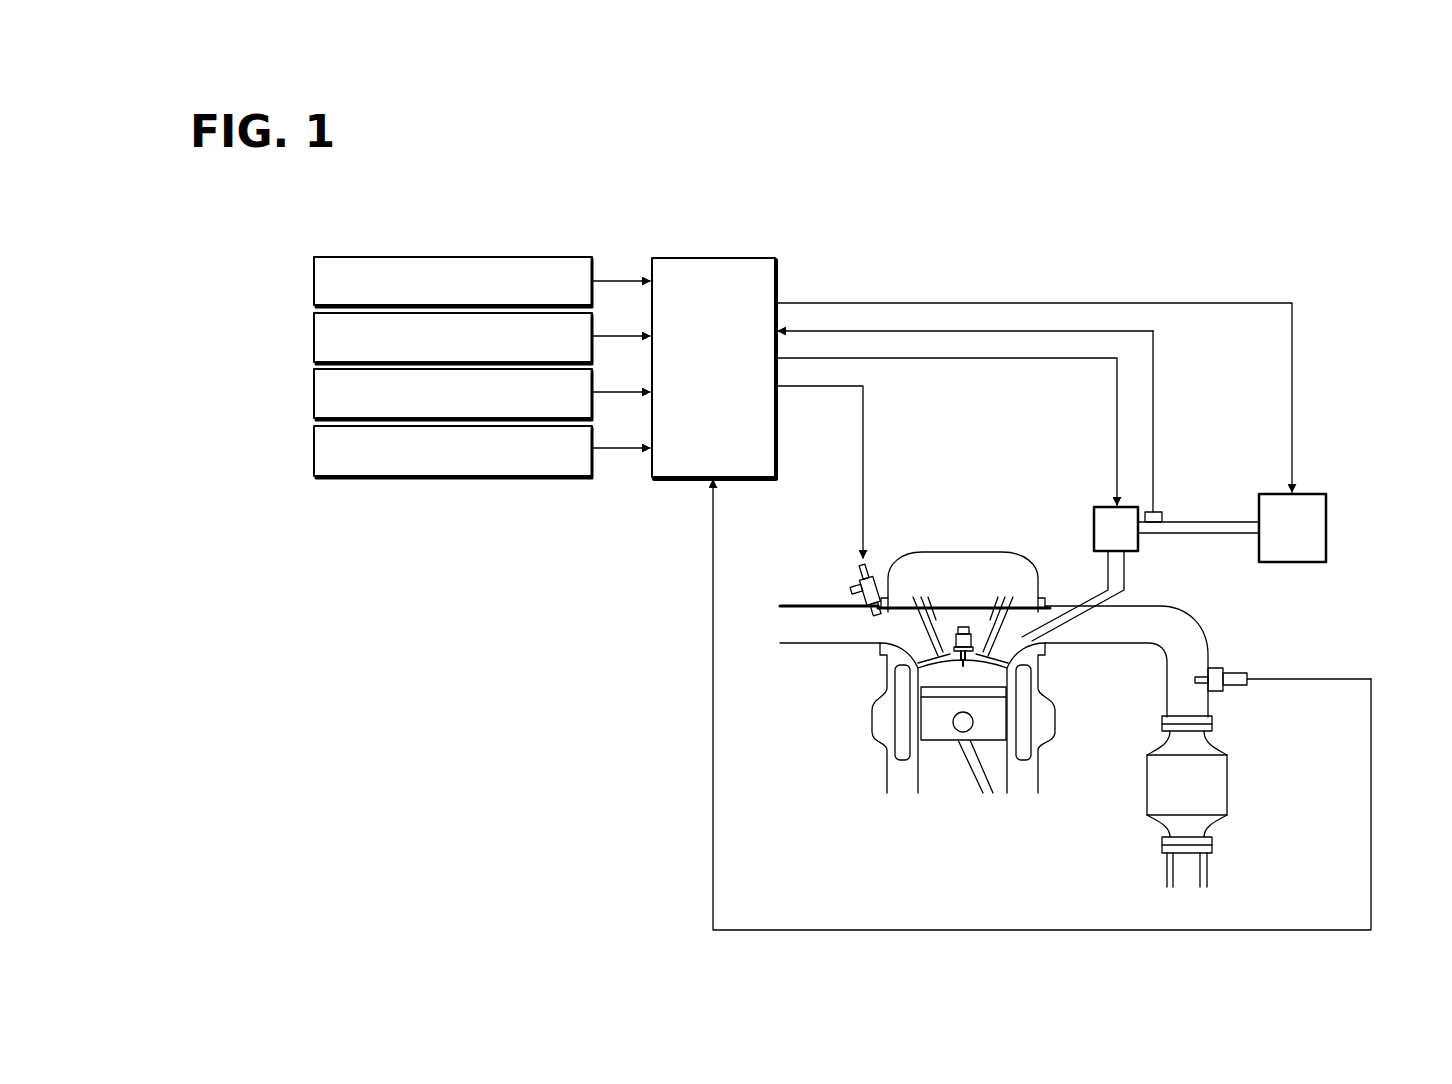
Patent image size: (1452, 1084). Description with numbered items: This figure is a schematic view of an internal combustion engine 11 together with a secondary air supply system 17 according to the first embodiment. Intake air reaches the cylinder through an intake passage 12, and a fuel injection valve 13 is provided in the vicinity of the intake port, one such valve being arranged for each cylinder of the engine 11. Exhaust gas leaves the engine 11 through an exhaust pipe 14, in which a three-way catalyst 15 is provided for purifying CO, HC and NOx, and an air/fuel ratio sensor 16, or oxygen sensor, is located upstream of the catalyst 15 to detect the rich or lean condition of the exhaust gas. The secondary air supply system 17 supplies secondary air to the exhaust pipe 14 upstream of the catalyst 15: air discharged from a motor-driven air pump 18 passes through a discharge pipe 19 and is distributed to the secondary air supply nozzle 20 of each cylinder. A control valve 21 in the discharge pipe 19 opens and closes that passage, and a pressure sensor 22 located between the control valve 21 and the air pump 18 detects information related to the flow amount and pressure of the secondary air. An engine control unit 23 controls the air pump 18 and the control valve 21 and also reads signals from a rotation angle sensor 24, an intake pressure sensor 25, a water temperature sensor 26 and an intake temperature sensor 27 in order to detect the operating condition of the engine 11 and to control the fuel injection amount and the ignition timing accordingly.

The internal combustion engine 11 is at (860, 731).
The intake pipe 12 is at (813, 645).
The fuel injection valve 13 is at (873, 584).
The exhaust pipe 14 is at (1153, 652).
The three-way catalyst 15 is at (1228, 785).
The air/fuel ratio sensor 16 is at (1237, 671).
The secondary air supply system 17 is at (1350, 463).
The air pump 18 is at (1326, 526).
The discharge pipe 19 is at (1204, 536).
The secondary air supply nozzle 20 is at (1063, 622).
The control valve 21 is at (1094, 527).
The pressure sensor 22 is at (1165, 516).
The engine control unit (ECU) 23 is at (712, 258).
The rotation angle sensor 24 is at (314, 283).
The intake pressure sensor 25 is at (314, 339).
The water temperature sensor 26 is at (314, 395).
The intake temperature sensor 27 is at (314, 452).